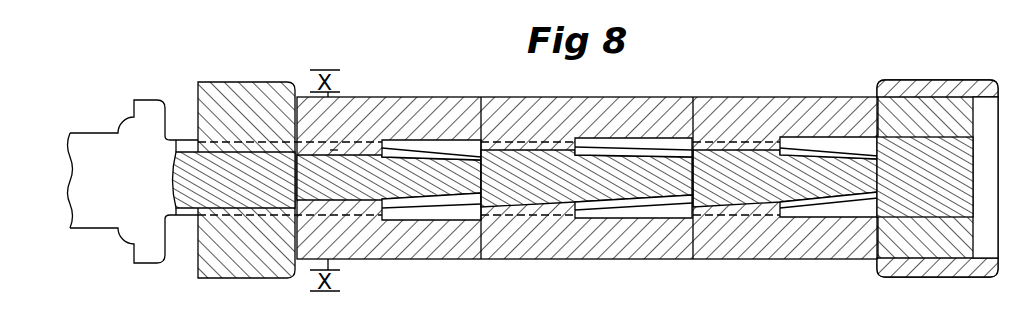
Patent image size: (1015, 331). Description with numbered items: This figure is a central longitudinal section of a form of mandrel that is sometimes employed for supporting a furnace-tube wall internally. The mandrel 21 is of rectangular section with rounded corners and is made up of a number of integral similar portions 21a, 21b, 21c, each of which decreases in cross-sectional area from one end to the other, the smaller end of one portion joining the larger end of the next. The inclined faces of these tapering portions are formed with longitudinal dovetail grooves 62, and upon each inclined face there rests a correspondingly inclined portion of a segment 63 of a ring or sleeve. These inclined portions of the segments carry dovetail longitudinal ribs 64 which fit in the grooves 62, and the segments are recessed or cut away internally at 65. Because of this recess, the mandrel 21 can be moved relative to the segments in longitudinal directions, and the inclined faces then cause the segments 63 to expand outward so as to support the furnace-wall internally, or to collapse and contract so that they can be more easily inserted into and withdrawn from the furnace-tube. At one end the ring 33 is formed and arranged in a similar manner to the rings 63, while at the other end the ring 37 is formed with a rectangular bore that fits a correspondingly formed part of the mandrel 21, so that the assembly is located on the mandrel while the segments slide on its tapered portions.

The mandrel 21 is at (521, 181).
The tapering portion of mandrel 21a is at (389, 177).
The tapering portion of mandrel 21b is at (586, 178).
The tapering portion of mandrel 21c is at (785, 177).
The ring 33 is at (246, 180).
The ring 37 is at (937, 178).
The dovetail groove 62 is at (459, 152).
The ring segment 63 is at (818, 90).
The dovetail rib 64 is at (334, 150).
The recess 65 is at (677, 147).